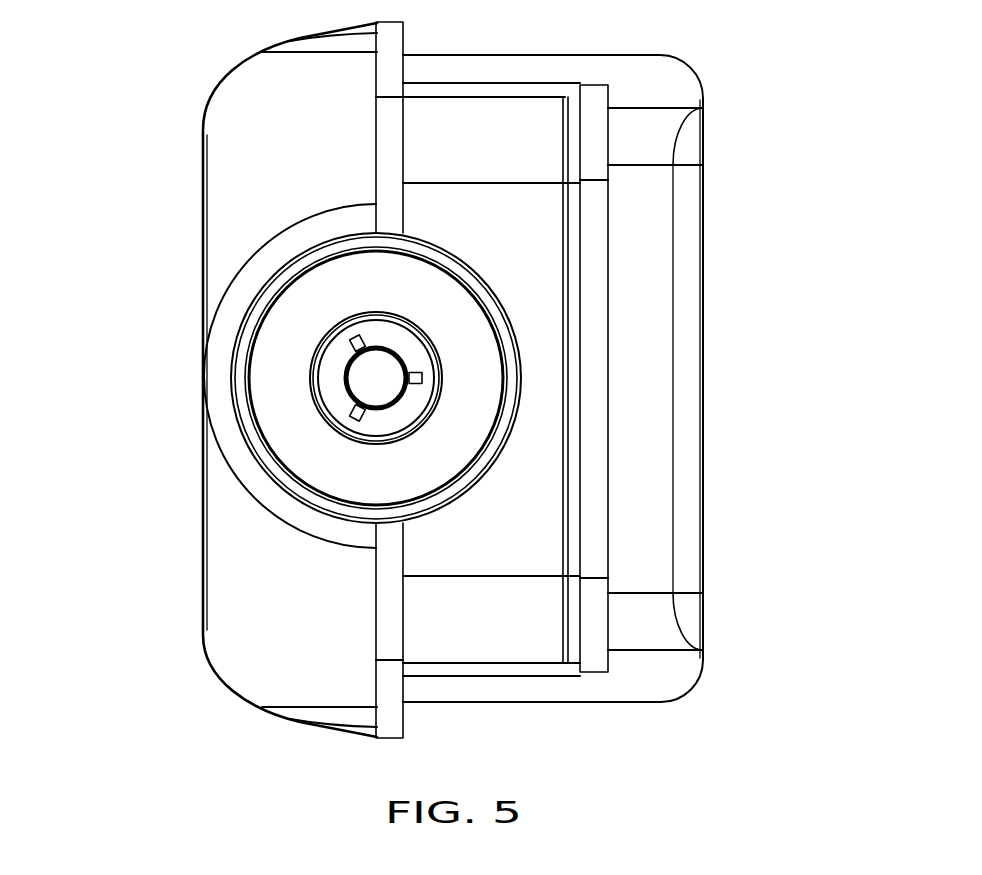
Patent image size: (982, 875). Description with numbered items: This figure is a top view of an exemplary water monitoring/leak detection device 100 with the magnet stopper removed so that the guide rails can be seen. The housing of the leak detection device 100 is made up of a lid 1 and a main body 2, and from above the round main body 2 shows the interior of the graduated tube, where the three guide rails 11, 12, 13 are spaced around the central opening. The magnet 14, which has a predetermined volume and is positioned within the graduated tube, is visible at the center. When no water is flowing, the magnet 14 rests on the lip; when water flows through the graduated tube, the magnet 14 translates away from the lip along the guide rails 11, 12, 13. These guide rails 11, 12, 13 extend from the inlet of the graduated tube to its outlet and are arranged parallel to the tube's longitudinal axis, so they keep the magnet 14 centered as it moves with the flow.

The leak detection device 100 is at (152, 104).
The lid 1 is at (660, 88).
The main body 2 is at (297, 392).
The guide rail 11 is at (355, 340).
The guide rail 12 is at (415, 380).
The guide rail 13 is at (355, 415).
The magnet 14 is at (377, 376).